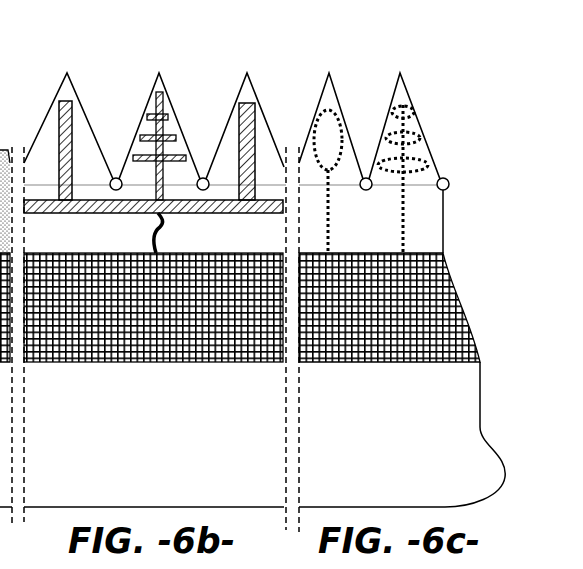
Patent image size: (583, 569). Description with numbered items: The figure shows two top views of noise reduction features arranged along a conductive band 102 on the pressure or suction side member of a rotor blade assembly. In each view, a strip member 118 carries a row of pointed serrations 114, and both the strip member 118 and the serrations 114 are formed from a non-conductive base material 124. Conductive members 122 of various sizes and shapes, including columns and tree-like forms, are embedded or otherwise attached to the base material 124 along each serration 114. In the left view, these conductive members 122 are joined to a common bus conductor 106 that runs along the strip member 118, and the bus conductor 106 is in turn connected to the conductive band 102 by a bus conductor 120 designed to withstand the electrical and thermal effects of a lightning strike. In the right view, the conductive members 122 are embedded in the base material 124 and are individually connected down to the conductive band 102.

In FIG. 6C, the conductive band 102 is at (455, 318).
In FIG. 6B, the common bus conductor 106 is at (118, 214).
In FIG. 6B, the serration 114 is at (174, 127).
In FIG. 6C, the serration 114 is at (413, 118).
In FIG. 6C, the strip member 118 is at (425, 230).
In FIG. 6B, the bus conductor 120 is at (165, 223).
In FIG. 6B, the conductive member 122 is at (59, 126).
In FIG. 6C, the conductive member 122 is at (345, 118).
In FIG. 6B, the non-conductive base material 124 is at (83, 148).
In FIG. 6C, the non-conductive base material 124 is at (323, 100).